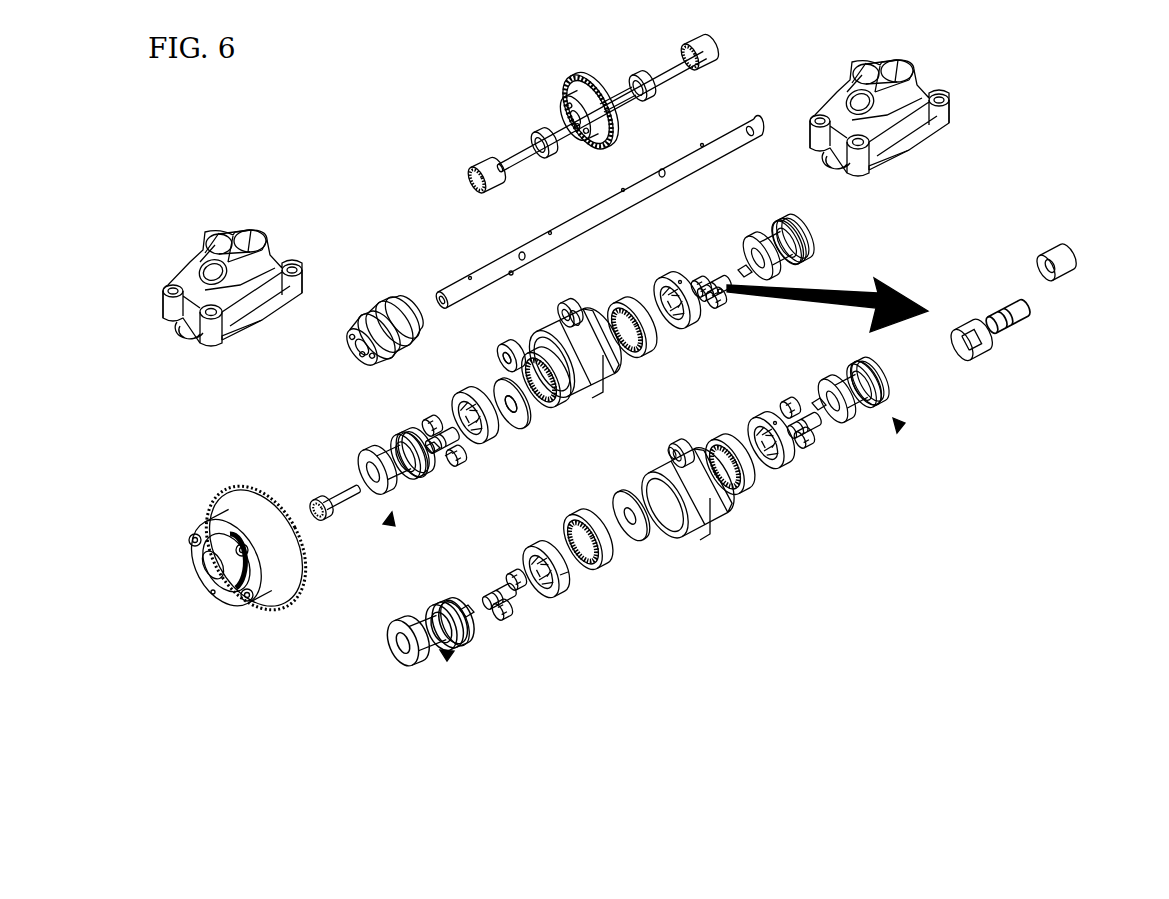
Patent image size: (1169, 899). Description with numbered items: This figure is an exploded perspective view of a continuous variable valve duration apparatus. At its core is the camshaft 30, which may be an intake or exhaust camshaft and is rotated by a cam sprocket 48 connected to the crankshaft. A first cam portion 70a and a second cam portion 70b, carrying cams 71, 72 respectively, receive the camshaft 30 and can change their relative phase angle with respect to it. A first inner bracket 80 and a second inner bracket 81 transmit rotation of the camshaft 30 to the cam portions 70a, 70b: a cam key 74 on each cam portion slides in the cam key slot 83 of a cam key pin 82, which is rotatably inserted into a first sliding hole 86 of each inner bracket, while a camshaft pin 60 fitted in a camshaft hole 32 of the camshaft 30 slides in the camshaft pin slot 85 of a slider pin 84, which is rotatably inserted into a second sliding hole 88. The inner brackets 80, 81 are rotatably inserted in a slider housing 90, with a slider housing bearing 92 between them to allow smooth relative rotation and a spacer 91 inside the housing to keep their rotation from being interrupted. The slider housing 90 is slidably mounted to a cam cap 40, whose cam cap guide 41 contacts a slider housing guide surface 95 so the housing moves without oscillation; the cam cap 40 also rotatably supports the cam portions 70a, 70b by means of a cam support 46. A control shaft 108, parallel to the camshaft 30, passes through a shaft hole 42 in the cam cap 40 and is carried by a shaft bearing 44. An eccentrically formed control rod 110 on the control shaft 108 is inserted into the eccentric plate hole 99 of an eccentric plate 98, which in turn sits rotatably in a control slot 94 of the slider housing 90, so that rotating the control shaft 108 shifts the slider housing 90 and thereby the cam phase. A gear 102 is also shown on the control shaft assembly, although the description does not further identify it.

The camshaft 30 is at (692, 170).
The camshaft hole 32 is at (662, 168).
The cam cap 40 is at (233, 220).
The cam cap guide 41 is at (195, 303).
The shaft hole 42 is at (195, 277).
The shaft bearing 44 is at (476, 165).
The cam support 46 is at (181, 332).
The cam sprocket 48 is at (252, 488).
The camshaft pin 60 is at (435, 432).
The first cam portion 70a is at (898, 422).
The second cam portion 70b is at (762, 208).
The cam 71 is at (362, 470).
The cam 72 is at (397, 443).
The cam key 74 is at (438, 455).
The first inner bracket 80 is at (505, 432).
The second inner bracket 81 is at (662, 276).
The cam key pin 82 is at (463, 466).
The cam key slot 83 is at (448, 460).
The slider pin 84 is at (427, 418).
The camshaft pin slot 85 is at (722, 295).
The first sliding hole 86 is at (474, 440).
The second sliding hole 88 is at (462, 402).
The slider housing 90 is at (590, 392).
The spacer 91 is at (527, 420).
The slider housing bearing 92 is at (552, 406).
The control slot 94 is at (570, 316).
The slider housing guide surface 95 is at (605, 365).
The eccentric plate 98 is at (503, 343).
The eccentric plate hole 99 is at (497, 358).
The worm wheel 102 is at (572, 82).
The control shaft 108 is at (620, 88).
The control rod 110 is at (516, 154).